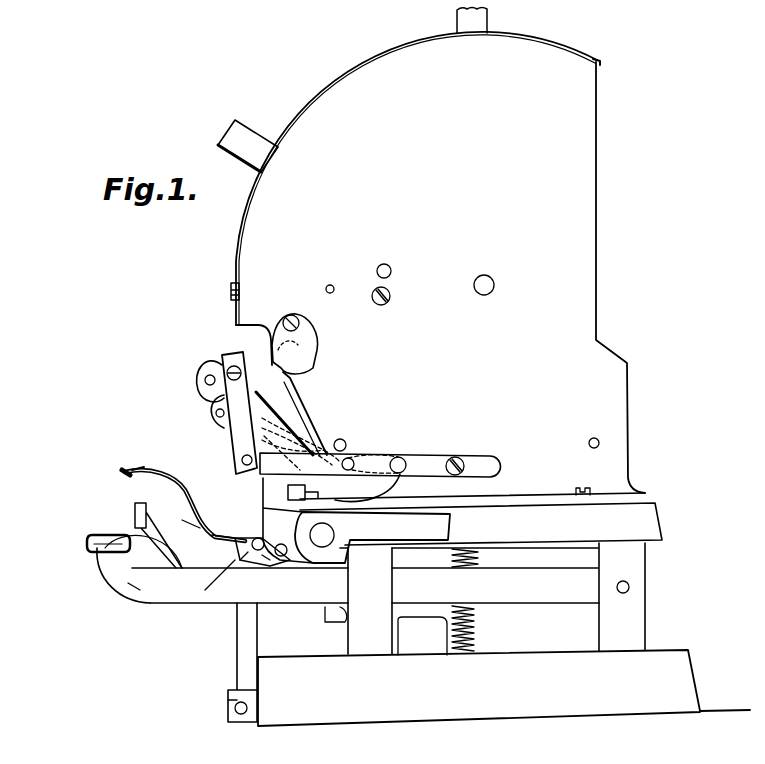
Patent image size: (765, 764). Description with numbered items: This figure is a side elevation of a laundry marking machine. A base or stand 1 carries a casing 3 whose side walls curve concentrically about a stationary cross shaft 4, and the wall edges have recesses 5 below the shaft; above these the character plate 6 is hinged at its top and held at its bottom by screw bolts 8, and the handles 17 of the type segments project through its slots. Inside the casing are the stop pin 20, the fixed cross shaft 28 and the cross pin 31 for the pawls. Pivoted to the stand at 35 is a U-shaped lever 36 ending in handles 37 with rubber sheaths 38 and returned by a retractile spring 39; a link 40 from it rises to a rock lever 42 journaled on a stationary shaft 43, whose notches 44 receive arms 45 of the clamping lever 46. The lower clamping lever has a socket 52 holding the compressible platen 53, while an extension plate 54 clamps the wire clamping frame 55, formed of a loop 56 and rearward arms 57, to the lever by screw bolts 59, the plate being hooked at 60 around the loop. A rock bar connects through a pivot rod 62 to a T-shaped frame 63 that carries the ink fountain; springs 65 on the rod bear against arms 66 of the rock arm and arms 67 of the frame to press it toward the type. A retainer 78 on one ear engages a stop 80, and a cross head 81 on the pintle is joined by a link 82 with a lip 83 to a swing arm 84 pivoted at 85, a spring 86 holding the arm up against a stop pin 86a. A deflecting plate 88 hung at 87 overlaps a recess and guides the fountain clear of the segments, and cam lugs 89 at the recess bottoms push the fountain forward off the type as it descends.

The base or stand 1 is at (504, 688).
The casing 3 is at (585, 150).
The stationary cross shaft 4 is at (495, 286).
The recesses 5 is at (258, 322).
The character plate 6 is at (351, 75).
The screw bolts 8 is at (233, 290).
The handles 17 is at (462, 20).
The stop pin 20 is at (600, 440).
The cross shaft 28 is at (389, 265).
The cross pin 31 is at (333, 286).
The pivot 35 is at (630, 586).
The U-shaped lever 36 is at (112, 560).
The handles 37 is at (92, 550).
The rubber sheaths 38 is at (110, 552).
The retractile spring 39 is at (476, 631).
The link 40 is at (352, 560).
The rock lever 42 is at (245, 640).
The stationary shaft 43 is at (335, 535).
The notches 44 is at (278, 553).
The arms 45 is at (288, 560).
The clamping lever 46 is at (252, 548).
The socket 52 is at (150, 600).
The platen 53 is at (134, 512).
The extension plate 54 is at (216, 535).
The wire clamping frame 55 is at (134, 470).
The loop 56 is at (120, 472).
The arms 57 is at (185, 520).
The screw bolts 59 is at (236, 545).
The hook 60 is at (188, 490).
The pivot rod 62 is at (339, 427).
The T-shaped frame 63 is at (261, 418).
The springs 65 is at (262, 426).
The arms 66 is at (316, 493).
The arms 67 is at (260, 412).
The retainer 78 is at (226, 368).
The stop 80 is at (218, 404).
The cross head 81 is at (212, 372).
The link 82 is at (258, 403).
The lip 83 is at (234, 356).
The swing arm 84 is at (415, 452).
The pivot 85 is at (466, 463).
The spring 86 is at (415, 492).
The stop pin 86a is at (345, 441).
The pivot 87 is at (292, 315).
The deflecting plate 88 is at (305, 347).
The cam lugs 89 is at (262, 396).